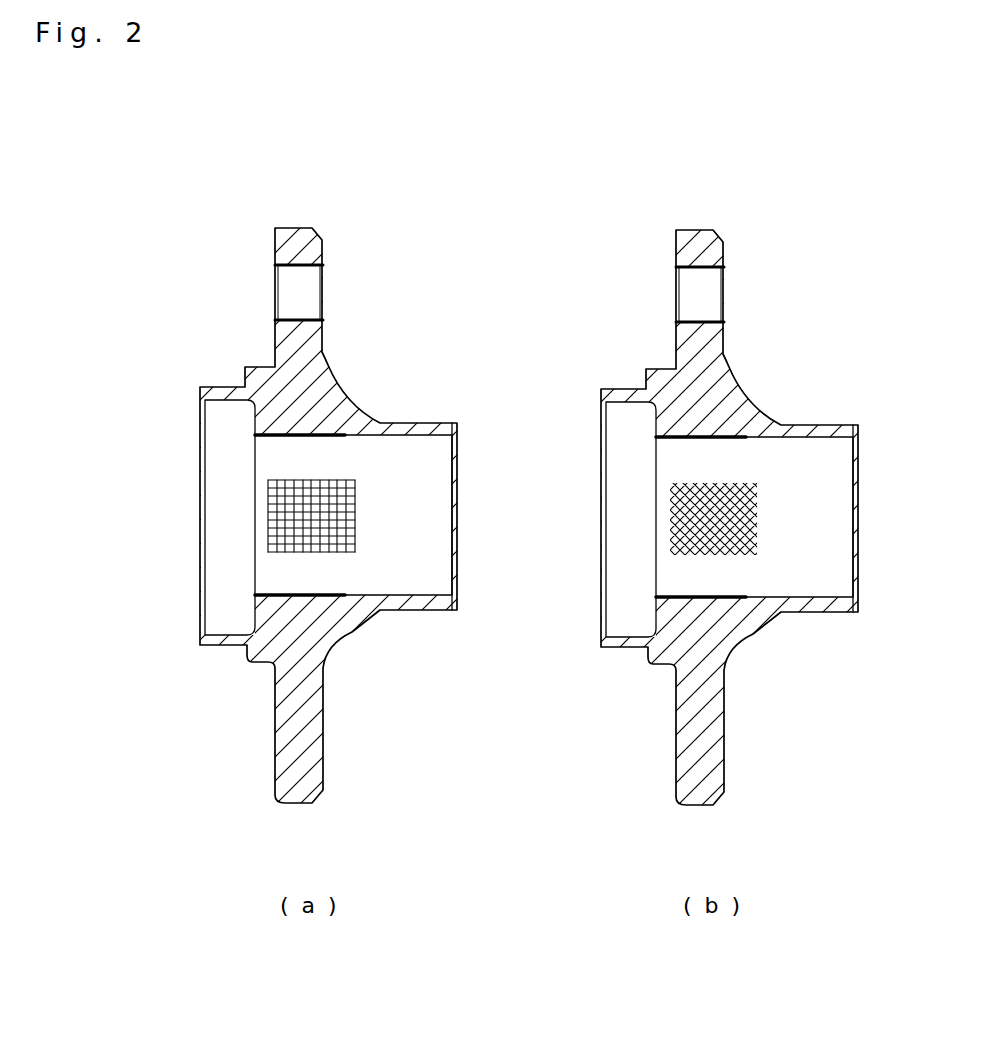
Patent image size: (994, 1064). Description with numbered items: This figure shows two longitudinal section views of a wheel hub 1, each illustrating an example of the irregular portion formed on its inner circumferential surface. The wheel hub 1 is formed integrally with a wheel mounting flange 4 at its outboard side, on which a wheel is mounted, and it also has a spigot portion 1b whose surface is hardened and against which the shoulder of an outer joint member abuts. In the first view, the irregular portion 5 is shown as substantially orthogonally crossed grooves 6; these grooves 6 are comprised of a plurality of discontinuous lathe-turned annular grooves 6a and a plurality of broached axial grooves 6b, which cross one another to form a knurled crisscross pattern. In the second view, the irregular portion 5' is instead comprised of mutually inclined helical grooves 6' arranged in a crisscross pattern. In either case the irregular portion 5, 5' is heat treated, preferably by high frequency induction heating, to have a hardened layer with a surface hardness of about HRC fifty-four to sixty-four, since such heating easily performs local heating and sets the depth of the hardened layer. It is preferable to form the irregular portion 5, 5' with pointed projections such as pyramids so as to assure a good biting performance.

The wheel hub 1 is at (405, 396).
The spigot portion 1b is at (395, 436).
The wheel mounting flange 4 is at (279, 230).
The irregular portion 5 is at (220, 517).
The irregular portion 5' is at (622, 519).
The substantially orthogonally crossed grooves 6 is at (290, 499).
The discontinuous lathe turned annular grooves 6a is at (350, 488).
The broached axial grooves 6b is at (346, 492).
The mutually inclined helical grooves 6' is at (663, 509).